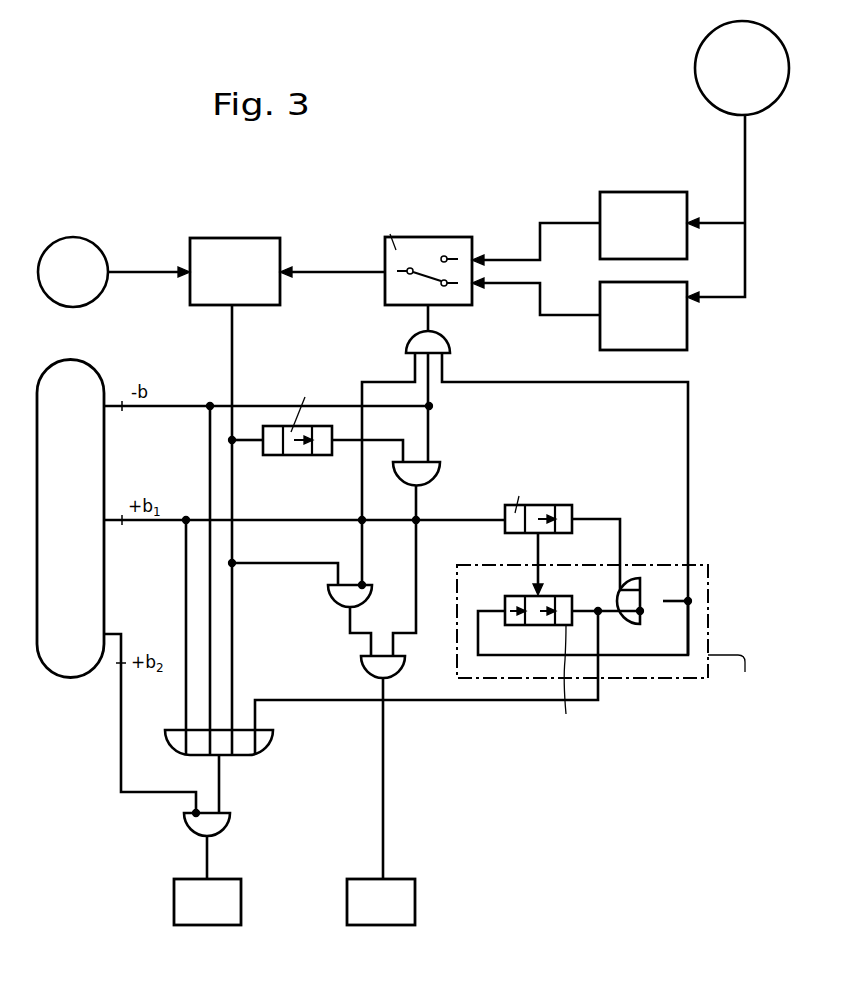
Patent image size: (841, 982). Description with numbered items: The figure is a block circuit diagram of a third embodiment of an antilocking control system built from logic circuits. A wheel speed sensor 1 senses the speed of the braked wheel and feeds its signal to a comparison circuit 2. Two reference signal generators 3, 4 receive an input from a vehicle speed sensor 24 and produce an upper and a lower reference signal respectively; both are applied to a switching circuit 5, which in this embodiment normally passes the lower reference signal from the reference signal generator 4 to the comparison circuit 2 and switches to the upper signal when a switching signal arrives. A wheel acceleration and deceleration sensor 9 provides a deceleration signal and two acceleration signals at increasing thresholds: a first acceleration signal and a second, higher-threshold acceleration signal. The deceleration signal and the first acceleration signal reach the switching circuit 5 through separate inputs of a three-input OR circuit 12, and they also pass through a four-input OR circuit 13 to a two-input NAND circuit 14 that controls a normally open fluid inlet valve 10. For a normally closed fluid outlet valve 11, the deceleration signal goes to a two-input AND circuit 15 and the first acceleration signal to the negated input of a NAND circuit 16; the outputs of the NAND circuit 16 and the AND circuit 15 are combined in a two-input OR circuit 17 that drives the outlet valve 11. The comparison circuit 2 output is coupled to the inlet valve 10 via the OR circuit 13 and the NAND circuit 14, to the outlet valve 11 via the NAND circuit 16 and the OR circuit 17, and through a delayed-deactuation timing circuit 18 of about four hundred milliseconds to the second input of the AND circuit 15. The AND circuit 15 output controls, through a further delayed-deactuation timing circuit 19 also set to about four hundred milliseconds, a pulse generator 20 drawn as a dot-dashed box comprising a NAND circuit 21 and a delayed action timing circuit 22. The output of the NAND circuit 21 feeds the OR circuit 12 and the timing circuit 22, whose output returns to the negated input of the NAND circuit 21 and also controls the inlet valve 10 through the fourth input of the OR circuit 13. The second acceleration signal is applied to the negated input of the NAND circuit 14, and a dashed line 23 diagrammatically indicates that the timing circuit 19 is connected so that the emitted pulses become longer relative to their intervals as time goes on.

The wheel speed sensor 1 is at (77, 240).
The comparison circuit 2 is at (238, 247).
The reference signal generator 3 is at (640, 204).
The reference signal generator 4 is at (680, 313).
The switching circuit 5 is at (421, 246).
The wheel acceleration and deceleration sensor 9 is at (52, 383).
The fluid inlet valve 10 is at (233, 905).
The fluid outlet valve 11 is at (412, 900).
The three-input OR circuit 12 is at (450, 344).
The four-input OR circuit 13 is at (270, 740).
The two-input NAND circuit 14 is at (222, 825).
The two-input AND circuit 15 is at (430, 476).
The two-input NAND circuit 16 is at (333, 595).
The two-input OR circuit 17 is at (396, 662).
The delayed-deactuation timing circuit 18 is at (297, 456).
The delayed-deactuation timing circuit 19 is at (541, 509).
The pulse generator 20 is at (656, 681).
The NAND circuit 21 is at (650, 614).
The delayed action timing circuit 22 is at (545, 617).
The dashed line 23 is at (535, 557).
The vehicle speed sensor 24 is at (700, 67).